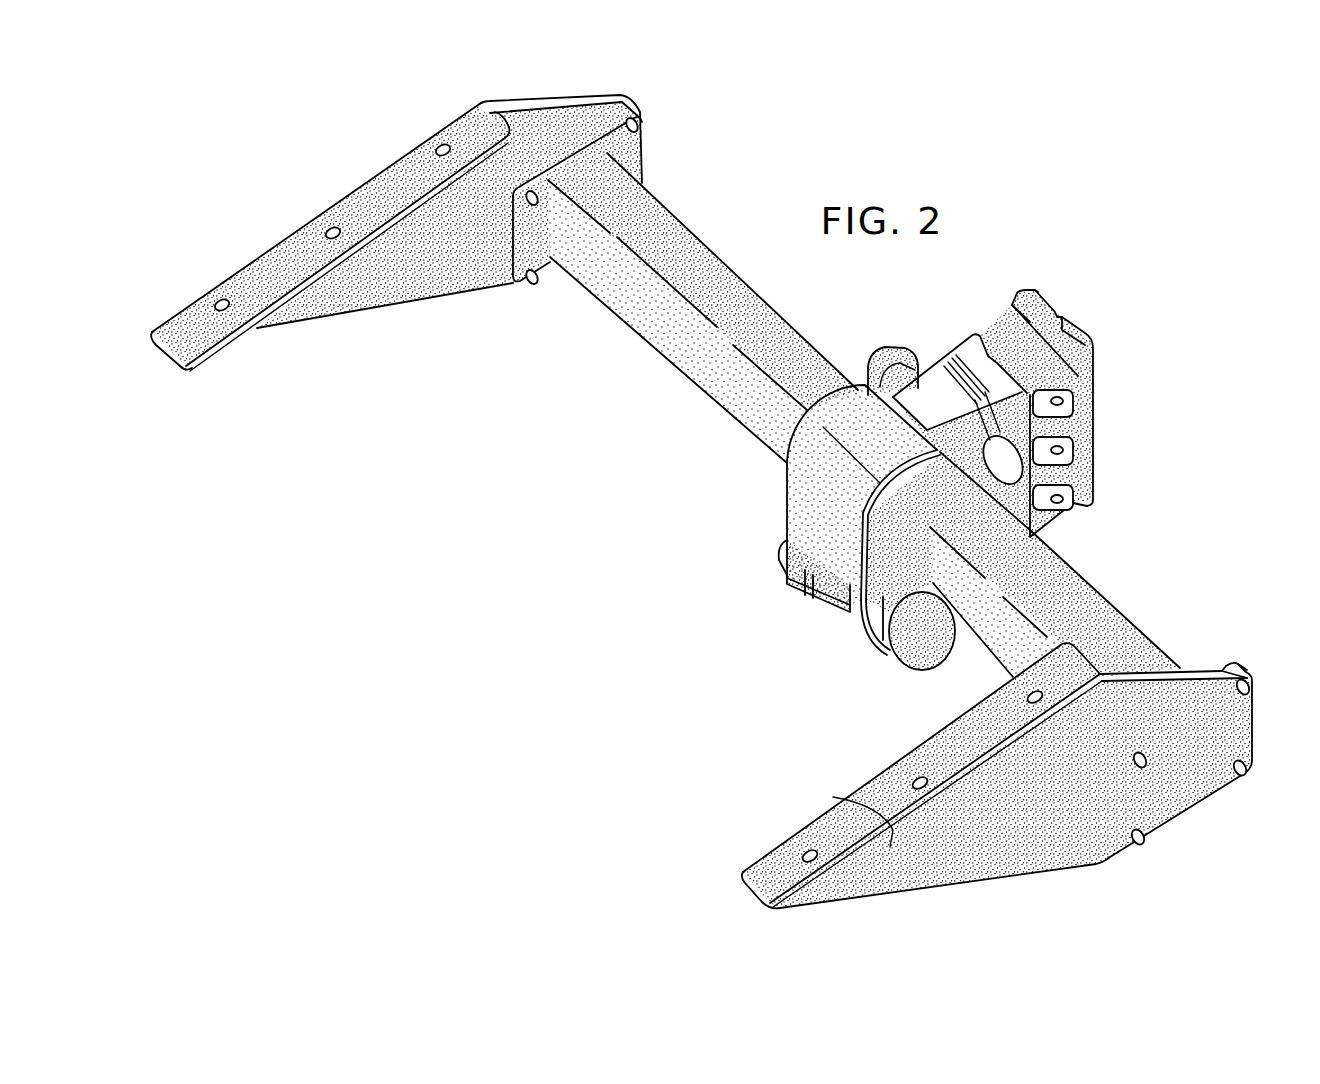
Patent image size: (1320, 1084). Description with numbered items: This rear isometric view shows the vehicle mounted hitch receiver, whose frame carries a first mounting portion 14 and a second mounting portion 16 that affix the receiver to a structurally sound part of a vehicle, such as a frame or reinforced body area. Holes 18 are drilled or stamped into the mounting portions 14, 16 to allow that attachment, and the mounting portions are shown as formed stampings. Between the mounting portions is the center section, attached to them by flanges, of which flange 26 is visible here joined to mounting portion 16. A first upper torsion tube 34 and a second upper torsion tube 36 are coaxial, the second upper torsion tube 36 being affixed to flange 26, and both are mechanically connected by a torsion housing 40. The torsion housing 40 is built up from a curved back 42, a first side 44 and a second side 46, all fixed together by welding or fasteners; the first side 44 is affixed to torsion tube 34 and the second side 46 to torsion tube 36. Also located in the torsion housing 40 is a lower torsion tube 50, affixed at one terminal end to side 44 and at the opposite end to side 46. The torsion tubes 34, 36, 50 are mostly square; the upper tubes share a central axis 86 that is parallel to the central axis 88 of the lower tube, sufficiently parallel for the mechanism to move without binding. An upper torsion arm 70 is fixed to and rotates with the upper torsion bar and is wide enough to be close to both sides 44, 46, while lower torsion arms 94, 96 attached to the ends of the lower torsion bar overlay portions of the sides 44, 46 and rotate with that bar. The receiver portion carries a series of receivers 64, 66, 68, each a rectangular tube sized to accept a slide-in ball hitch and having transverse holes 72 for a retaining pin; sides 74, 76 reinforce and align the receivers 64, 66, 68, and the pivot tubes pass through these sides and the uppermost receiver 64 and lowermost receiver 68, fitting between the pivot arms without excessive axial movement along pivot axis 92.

The first mounting portion 14 is at (835, 800).
The second mounting portion 16 is at (400, 305).
The holes 18 is at (232, 318).
The flange 26 is at (548, 278).
The first upper torsion tube 34 is at (1003, 640).
The second upper torsion tube 36 is at (655, 378).
The torsion housing 40 is at (800, 553).
The curved back 42 is at (848, 453).
The first side 44 is at (858, 647).
The second side 46 is at (790, 583).
The lower torsion tube 50 is at (828, 610).
The receiver 64 is at (1037, 396).
The receiver 66 is at (1102, 413).
The receiver 68 is at (1100, 471).
The upper torsion arm 70 is at (948, 362).
The transverse holes 72 is at (1066, 495).
The side 74 is at (1090, 334).
The side 76 is at (1022, 295).
The central axis 86 is at (1047, 632).
The central axis 88 is at (782, 472).
The pivot axis 92 is at (862, 345).
The lower torsion arm 94 is at (903, 668).
The lower torsion arm 96 is at (778, 545).